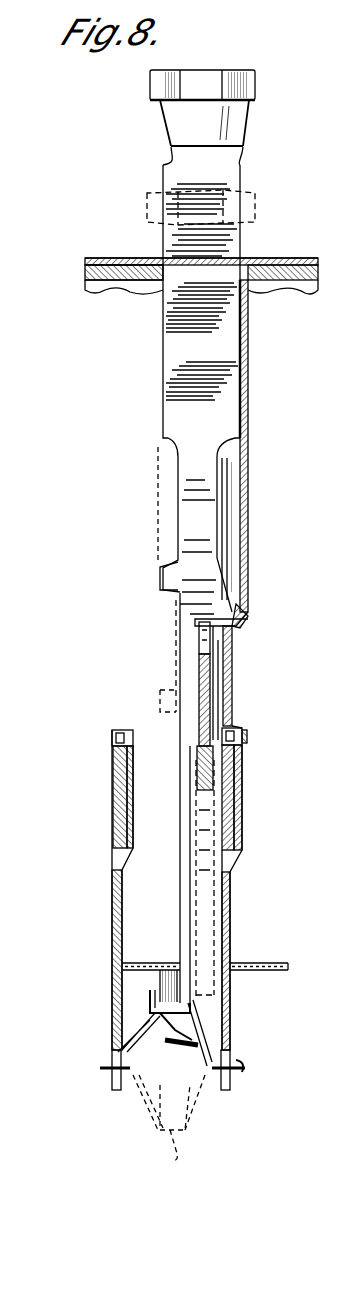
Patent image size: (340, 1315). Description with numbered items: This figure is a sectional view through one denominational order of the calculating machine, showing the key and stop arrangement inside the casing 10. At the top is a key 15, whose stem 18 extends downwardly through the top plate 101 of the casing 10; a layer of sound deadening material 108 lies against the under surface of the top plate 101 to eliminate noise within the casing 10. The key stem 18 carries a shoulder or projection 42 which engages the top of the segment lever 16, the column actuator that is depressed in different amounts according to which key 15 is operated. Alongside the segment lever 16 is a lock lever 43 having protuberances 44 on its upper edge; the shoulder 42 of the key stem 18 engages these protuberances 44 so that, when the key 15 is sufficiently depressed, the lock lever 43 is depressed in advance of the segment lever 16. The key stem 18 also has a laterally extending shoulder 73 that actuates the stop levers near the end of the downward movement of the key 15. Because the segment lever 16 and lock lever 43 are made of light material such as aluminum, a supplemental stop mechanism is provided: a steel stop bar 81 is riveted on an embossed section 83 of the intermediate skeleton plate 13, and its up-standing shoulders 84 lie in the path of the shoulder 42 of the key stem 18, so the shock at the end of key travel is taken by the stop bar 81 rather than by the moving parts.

The key 15 is at (250, 190).
The casing 10 is at (292, 255).
The top plate 101 is at (100, 258).
The sound deadening material 108 is at (90, 274).
The key stem 18 is at (220, 344).
The laterally extending shoulder 73 is at (170, 598).
The protuberances 44 is at (199, 636).
The lock lever 43 is at (205, 680).
The segment lever 16 is at (200, 882).
The shoulder 42 is at (245, 618).
The up-standing shoulders 84 is at (112, 750).
The embossed section 83 is at (113, 779).
The stop bar 81 is at (112, 800).
The intermediate skeleton plates 13 is at (114, 1026).